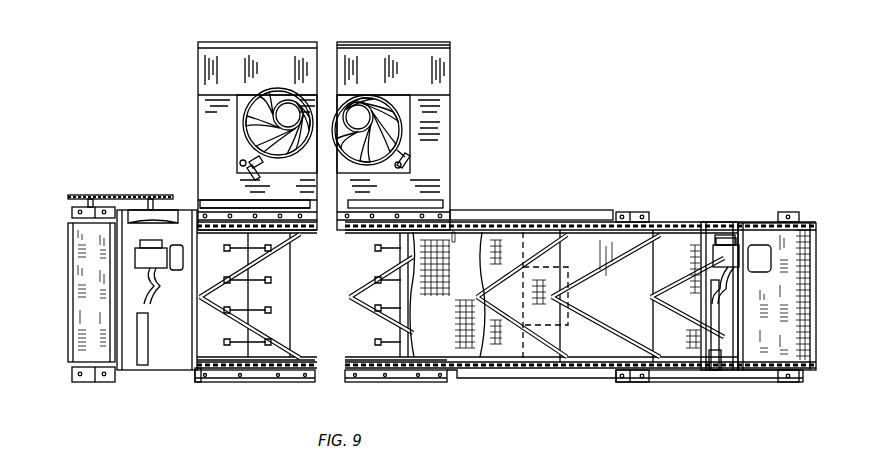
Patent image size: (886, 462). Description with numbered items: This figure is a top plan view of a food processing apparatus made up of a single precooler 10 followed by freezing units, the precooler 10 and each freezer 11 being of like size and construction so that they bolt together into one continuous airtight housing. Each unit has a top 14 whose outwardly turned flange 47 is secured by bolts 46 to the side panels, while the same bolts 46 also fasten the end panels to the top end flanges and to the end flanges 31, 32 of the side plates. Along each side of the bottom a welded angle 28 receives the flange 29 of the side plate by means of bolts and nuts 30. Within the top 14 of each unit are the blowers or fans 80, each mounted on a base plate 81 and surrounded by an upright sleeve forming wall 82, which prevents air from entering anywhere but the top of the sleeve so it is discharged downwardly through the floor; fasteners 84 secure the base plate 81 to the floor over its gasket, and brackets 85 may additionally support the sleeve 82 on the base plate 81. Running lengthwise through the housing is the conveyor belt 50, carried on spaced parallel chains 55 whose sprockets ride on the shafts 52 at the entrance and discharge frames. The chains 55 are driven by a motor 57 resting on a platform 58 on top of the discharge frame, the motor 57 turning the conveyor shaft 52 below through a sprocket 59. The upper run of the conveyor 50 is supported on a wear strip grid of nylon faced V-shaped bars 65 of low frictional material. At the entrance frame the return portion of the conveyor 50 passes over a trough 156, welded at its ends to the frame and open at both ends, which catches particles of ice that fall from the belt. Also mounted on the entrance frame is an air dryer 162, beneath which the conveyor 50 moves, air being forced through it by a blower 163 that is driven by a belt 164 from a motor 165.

The precooler 10 is at (464, 76).
The freezer 11 is at (190, 72).
The top 14 is at (243, 60).
The angle 28 is at (443, 34).
The flange 29 is at (287, 381).
The bolts and nuts 30 is at (247, 382).
The end flange 31 is at (458, 380).
The end flange 32 is at (197, 382).
The bolts 46 is at (208, 46).
The outwardly turned flange 47 is at (395, 47).
The conveyor belt 50 is at (80, 250).
The shaft 52 is at (800, 222).
The chain 55 is at (70, 224).
The motor 57 is at (125, 207).
The platform 58 is at (178, 210).
The sprocket 59 is at (98, 195).
The wear strip bars 65 is at (303, 282).
The blower or fan 80 is at (288, 104).
The base plate 81 is at (240, 138).
The sleeve forming wall 82 is at (258, 104).
The fasteners 84 is at (240, 164).
The brackets 85 is at (257, 174).
The trough 156 is at (683, 372).
The air dryer 162 is at (143, 300).
The blower 163 is at (137, 258).
The belt 164 is at (732, 216).
The motor 165 is at (183, 258).